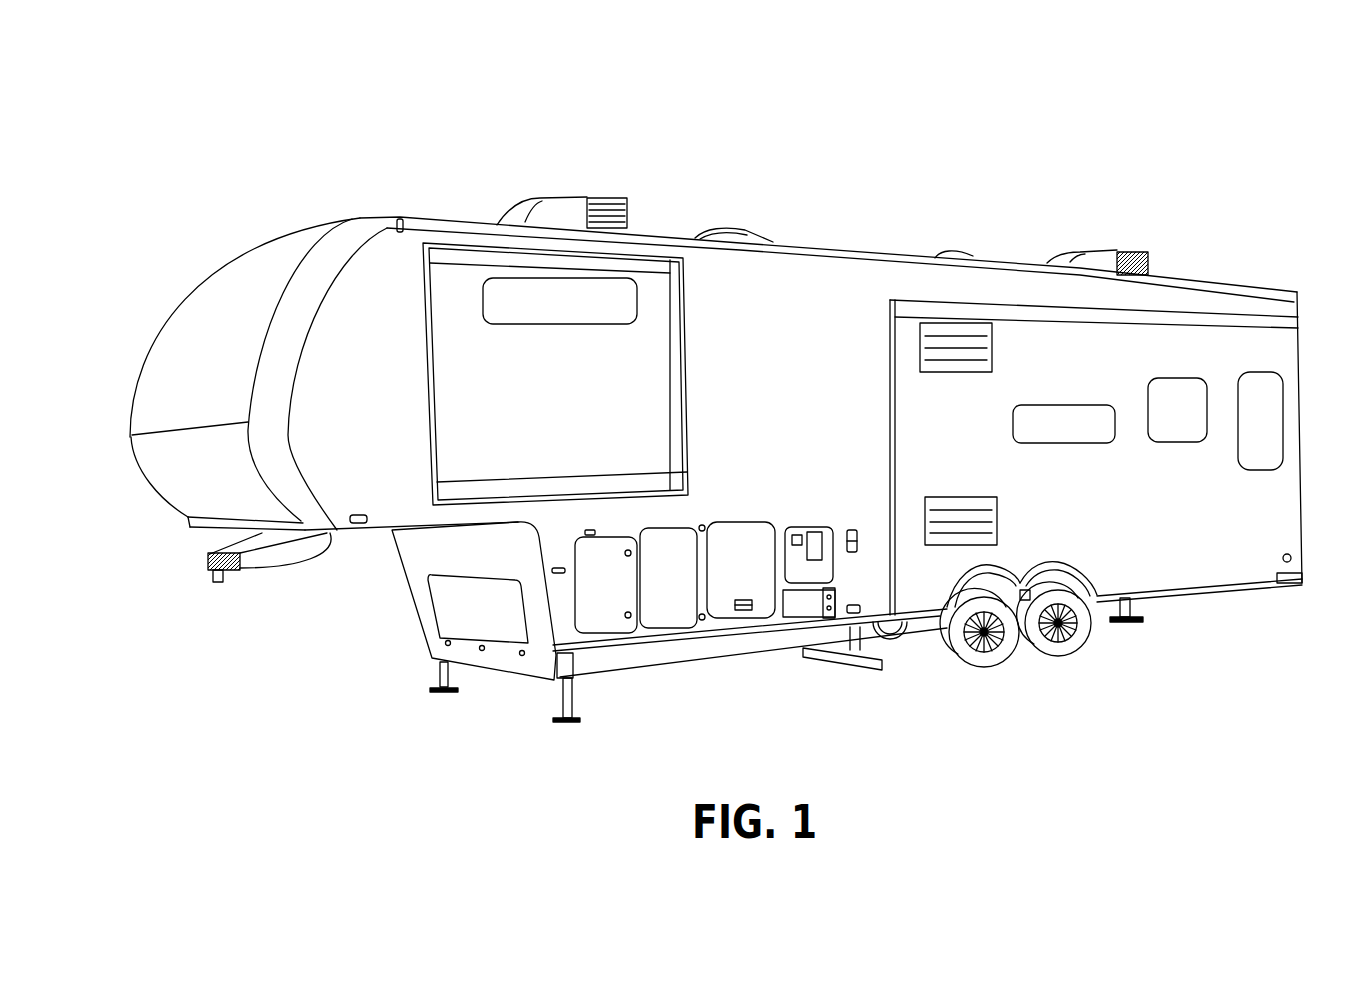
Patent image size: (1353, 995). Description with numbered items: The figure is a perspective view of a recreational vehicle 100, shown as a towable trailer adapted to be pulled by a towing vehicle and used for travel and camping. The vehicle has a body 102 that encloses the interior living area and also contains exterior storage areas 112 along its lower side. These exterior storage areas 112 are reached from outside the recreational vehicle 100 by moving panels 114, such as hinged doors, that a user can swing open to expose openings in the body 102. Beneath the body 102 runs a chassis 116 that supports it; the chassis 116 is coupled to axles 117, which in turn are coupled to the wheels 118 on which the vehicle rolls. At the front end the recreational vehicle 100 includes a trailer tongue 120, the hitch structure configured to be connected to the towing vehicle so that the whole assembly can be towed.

The recreational vehicle 100 is at (398, 124).
The body 102 is at (732, 255).
The exterior storage areas 112 is at (677, 597).
The panels 114 is at (598, 625).
The chassis 116 is at (773, 643).
The axles 117 is at (907, 637).
The wheels 118 is at (1057, 650).
The trailer tongue 120 is at (165, 557).